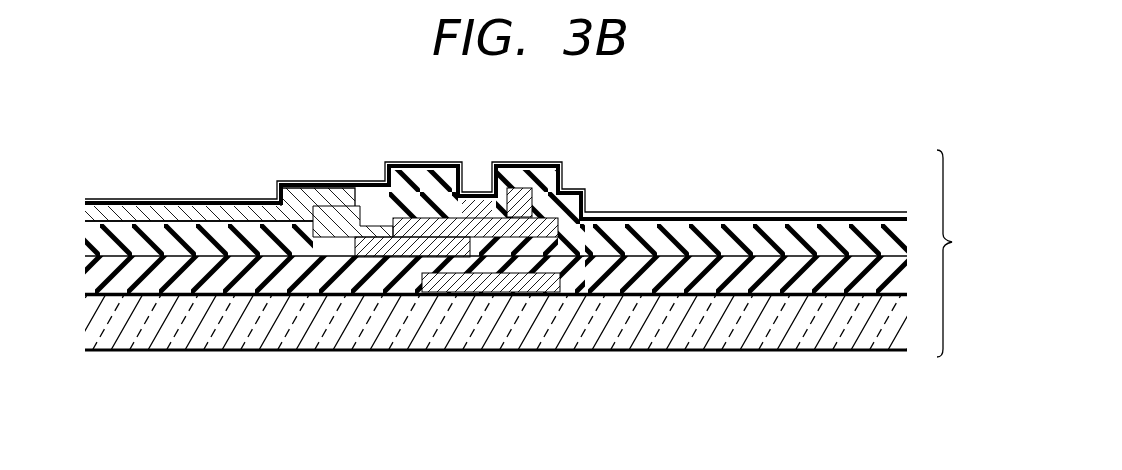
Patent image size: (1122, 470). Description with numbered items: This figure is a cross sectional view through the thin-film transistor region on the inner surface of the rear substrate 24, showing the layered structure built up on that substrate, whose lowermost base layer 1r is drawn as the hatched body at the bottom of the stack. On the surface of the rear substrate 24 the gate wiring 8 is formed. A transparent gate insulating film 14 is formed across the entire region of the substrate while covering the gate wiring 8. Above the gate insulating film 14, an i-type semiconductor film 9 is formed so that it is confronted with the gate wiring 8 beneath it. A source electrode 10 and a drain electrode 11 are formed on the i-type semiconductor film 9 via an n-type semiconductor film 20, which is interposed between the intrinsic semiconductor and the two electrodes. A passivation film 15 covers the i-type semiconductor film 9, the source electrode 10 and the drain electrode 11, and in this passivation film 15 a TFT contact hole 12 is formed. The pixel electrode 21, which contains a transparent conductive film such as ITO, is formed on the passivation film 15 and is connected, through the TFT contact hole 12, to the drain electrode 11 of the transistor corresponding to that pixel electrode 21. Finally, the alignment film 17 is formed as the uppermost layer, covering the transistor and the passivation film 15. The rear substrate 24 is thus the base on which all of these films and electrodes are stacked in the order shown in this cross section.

The substrate 1r is at (192, 322).
The gate insulating film 14 is at (737, 283).
The passivation film 15 is at (820, 248).
The gate wiring 8 is at (496, 288).
The i-type semiconductor film 9 is at (542, 232).
The drain electrode 11 is at (380, 240).
The TFT contact hole 12 is at (340, 218).
The n-type semiconductor film 20 is at (430, 215).
The source electrode 10 is at (519, 195).
The pixel electrode 21 is at (212, 204).
The alignment film 17 is at (835, 212).
The rear substrate 24 is at (963, 253).